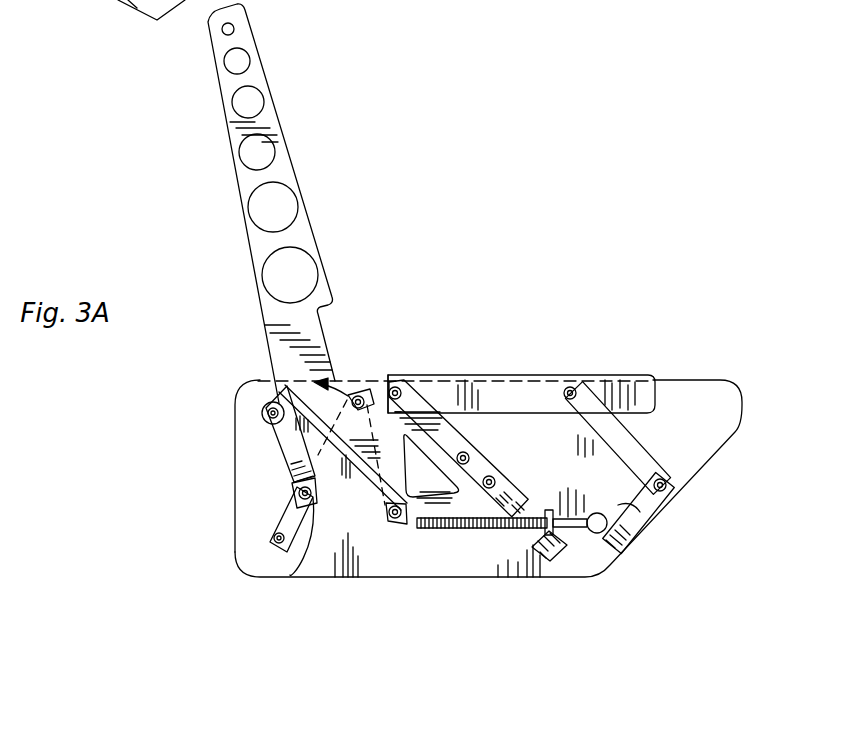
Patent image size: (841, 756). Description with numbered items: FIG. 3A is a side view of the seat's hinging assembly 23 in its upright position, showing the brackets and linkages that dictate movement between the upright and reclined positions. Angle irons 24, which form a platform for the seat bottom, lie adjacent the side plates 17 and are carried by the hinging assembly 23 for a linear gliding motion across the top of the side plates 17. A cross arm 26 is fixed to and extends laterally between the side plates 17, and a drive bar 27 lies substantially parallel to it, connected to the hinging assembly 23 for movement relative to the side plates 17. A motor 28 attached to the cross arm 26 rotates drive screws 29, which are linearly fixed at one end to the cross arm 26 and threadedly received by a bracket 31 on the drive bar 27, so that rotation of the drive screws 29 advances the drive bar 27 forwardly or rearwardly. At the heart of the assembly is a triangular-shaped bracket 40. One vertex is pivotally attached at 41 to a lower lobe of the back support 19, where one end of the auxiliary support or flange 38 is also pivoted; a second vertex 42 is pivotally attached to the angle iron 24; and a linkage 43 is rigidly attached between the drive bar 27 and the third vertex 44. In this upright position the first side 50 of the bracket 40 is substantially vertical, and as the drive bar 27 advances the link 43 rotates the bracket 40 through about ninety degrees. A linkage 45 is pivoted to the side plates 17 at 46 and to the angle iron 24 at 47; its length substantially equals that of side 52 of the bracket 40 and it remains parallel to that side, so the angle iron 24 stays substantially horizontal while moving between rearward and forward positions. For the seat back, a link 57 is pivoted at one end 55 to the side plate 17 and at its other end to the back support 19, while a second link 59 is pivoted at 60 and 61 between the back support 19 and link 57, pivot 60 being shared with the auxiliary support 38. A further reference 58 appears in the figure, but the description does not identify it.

The side plates 17 is at (135, 8).
The back support 19 is at (287, 167).
The hinging assembly 23 is at (388, 578).
The angle irons 24 is at (517, 387).
The cross arm 26 is at (608, 542).
The drive bar 27 is at (568, 560).
The motor 28 is at (637, 528).
The drive screws 29 is at (448, 530).
The bracket 31 is at (550, 507).
The flange 38 is at (353, 504).
The triangular-shaped bracket 40 is at (400, 447).
The pivot point 41 is at (403, 520).
The second vertex 42 is at (405, 382).
The linkage 43 is at (520, 508).
The third vertex 44 is at (492, 470).
The linkage 45 is at (622, 438).
The pivot point 46 is at (673, 482).
The pivotal attachment 47 is at (573, 385).
The first side 50 is at (382, 385).
The side 52 is at (453, 387).
The pivot point 55 is at (262, 574).
The link 57 is at (282, 521).
The latch pivot 58 is at (353, 390).
The second link 59 is at (283, 447).
The pivot point 60 is at (265, 397).
The pivot point 61 is at (290, 575).